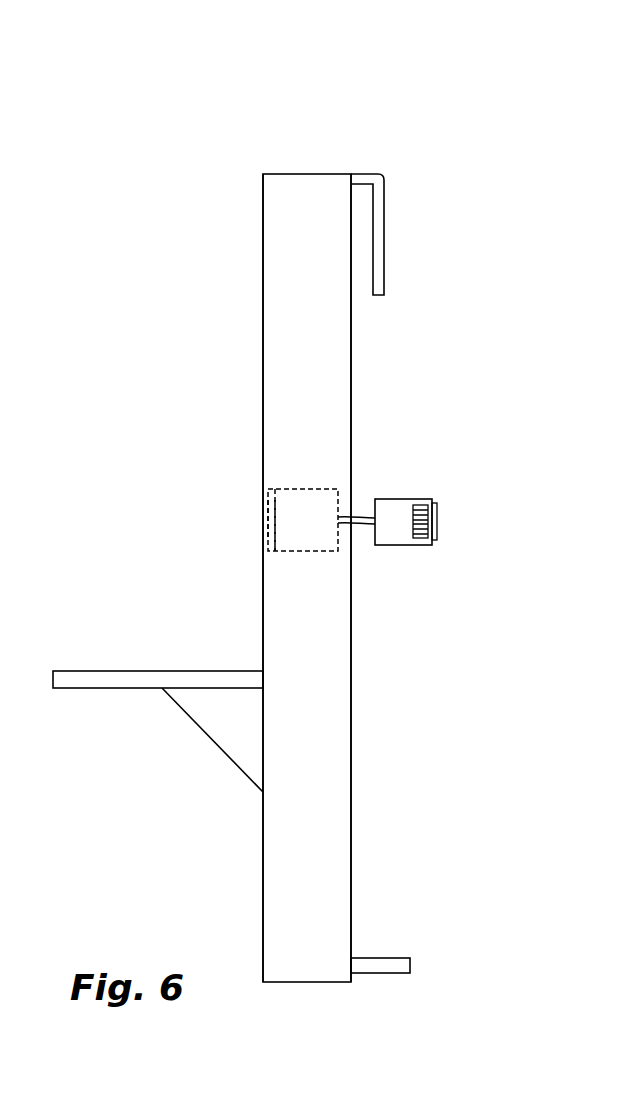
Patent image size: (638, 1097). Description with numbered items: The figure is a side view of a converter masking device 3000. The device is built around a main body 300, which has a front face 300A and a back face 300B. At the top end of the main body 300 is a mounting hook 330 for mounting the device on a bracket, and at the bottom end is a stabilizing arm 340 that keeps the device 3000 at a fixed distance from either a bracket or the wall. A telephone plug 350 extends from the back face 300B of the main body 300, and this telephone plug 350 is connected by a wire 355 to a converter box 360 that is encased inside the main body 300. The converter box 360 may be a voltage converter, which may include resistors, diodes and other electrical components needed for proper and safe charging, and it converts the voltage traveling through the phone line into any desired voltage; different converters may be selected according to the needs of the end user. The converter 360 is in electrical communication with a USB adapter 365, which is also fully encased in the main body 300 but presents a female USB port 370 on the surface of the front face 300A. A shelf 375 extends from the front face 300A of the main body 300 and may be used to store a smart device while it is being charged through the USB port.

The converter masking device 3000 is at (215, 122).
The main body 300 is at (283, 862).
The front face 300A is at (263, 318).
The back face 300B is at (352, 826).
The mounting hook 330 is at (387, 178).
The stabilizing arm 340 is at (365, 958).
The telephone plug 350 is at (402, 545).
The wire 355 is at (366, 517).
The converter box 360 is at (302, 489).
The USB adapter 365 is at (266, 537).
The female USB port 370 is at (266, 522).
The shelf 375 is at (120, 671).